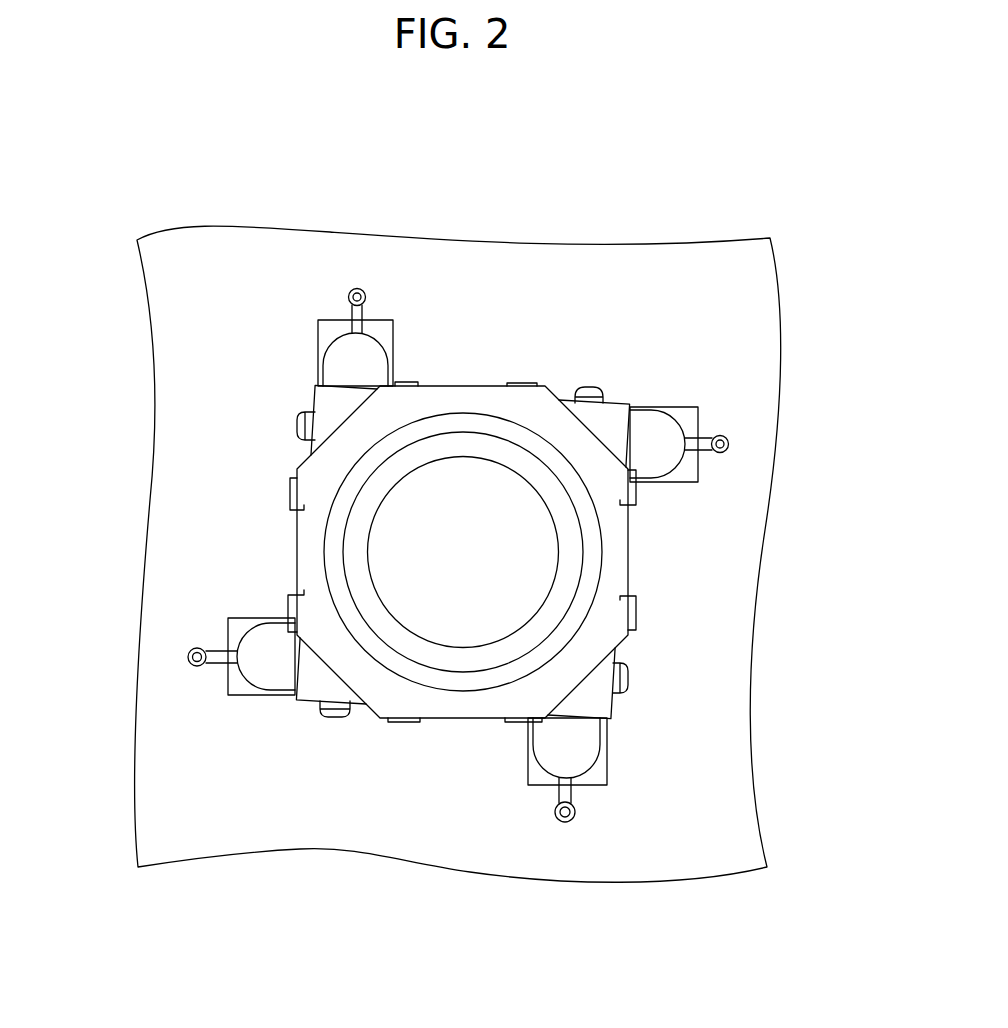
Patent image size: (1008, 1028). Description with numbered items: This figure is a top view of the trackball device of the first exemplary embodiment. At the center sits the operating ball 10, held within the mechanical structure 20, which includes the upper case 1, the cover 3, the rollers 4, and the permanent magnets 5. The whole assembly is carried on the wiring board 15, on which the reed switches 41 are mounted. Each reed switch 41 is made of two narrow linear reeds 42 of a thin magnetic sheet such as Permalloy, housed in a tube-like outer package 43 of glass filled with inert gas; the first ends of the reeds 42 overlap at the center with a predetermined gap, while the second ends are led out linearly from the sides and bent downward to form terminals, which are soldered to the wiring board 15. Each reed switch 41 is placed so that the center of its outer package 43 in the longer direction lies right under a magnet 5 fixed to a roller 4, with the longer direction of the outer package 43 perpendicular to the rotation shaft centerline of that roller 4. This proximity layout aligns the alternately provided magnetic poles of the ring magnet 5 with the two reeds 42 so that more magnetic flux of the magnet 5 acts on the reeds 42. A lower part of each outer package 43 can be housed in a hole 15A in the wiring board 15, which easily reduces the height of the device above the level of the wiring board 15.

The upper case 1 is at (332, 540).
The cover 3 is at (435, 400).
The roller 4 is at (589, 388).
The permanent magnet 5 is at (615, 408).
The operating ball 10 is at (452, 473).
The wiring board 15 is at (436, 842).
The hole 15A is at (380, 320).
The mechanical structure 20 is at (508, 362).
The reed switch 41 is at (700, 137).
The reed 42 is at (704, 438).
The outer package 43 is at (657, 423).